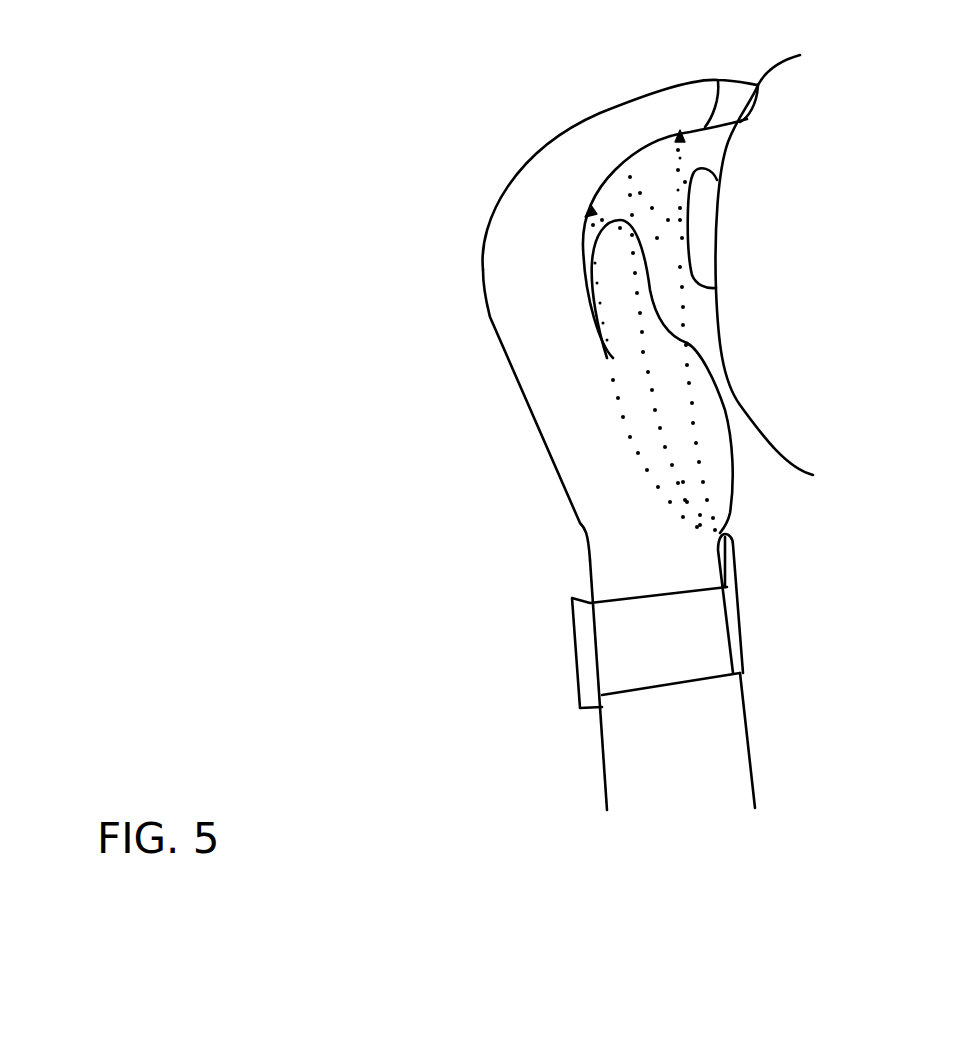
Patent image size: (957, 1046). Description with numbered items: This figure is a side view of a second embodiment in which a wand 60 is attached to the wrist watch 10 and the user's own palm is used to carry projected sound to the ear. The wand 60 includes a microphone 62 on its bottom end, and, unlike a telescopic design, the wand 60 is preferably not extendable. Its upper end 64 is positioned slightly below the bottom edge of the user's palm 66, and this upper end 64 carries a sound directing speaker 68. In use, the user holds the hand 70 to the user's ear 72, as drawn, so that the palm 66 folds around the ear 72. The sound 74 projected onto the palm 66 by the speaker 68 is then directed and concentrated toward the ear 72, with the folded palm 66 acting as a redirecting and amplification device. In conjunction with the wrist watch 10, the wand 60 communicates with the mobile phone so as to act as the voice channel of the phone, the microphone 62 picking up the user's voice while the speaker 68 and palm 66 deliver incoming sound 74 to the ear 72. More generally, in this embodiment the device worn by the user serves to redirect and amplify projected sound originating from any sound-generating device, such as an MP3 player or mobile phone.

The wrist watch 10 is at (493, 663).
The wand 60 is at (775, 613).
The microphone 62 is at (740, 675).
The upper end 64 is at (742, 543).
The palm 66 is at (593, 368).
The sound directing speaker 68 is at (717, 548).
The hand 70 is at (547, 418).
The ear 72 is at (700, 222).
The sound 74 is at (632, 437).